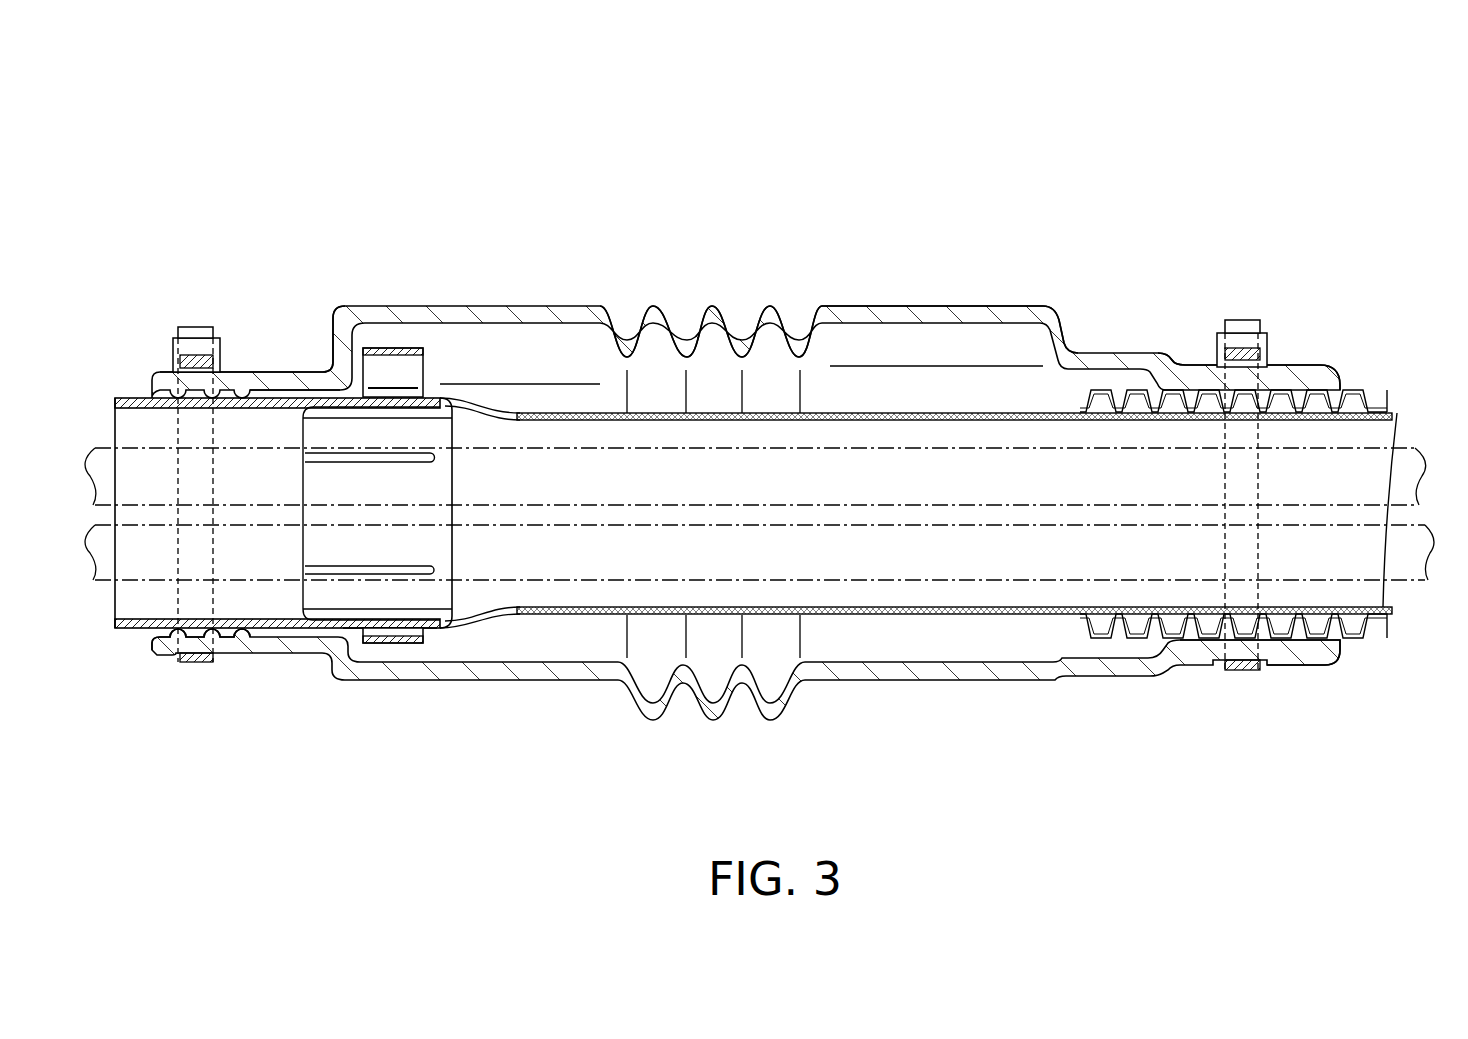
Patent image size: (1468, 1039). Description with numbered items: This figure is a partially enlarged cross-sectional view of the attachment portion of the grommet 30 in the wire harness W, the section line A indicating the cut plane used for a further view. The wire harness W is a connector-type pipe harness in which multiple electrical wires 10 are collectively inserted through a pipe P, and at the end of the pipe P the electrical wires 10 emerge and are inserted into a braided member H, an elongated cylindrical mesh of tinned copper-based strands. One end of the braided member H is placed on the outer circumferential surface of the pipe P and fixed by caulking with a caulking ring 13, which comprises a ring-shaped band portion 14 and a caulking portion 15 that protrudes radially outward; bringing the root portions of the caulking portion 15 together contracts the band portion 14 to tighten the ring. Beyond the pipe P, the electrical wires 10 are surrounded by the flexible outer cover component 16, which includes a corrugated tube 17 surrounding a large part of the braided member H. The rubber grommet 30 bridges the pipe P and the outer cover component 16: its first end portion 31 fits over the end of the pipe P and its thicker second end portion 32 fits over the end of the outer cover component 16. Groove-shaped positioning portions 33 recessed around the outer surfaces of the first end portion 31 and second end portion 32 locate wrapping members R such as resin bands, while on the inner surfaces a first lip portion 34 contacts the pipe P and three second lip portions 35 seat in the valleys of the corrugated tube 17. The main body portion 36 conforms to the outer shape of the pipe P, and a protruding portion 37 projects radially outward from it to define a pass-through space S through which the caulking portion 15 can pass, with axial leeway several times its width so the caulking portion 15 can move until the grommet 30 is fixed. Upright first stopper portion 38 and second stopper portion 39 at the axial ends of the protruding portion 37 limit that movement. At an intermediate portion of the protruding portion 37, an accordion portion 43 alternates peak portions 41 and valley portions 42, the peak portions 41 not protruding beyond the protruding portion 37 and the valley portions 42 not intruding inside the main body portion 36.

The electrical wires 10 is at (1398, 540).
The caulking ring 13 is at (393, 643).
The band portion 14 is at (412, 643).
The caulking portion 15 is at (393, 372).
The outer cover component 16 is at (944, 458).
The corrugated tube 17 is at (1352, 398).
The grommet 30 is at (902, 312).
The first end portion 31 is at (257, 378).
The second end portion 32 is at (1288, 375).
The positioning portions 33 is at (190, 662).
The first lip portion 34 is at (198, 630).
The second lip portion 35 is at (1265, 615).
The main body portion 36 is at (487, 676).
The protruding portion 37 is at (974, 312).
The first stopper portion 38 is at (330, 350).
The second stopper portion 39 is at (1057, 340).
The peak portions 41 is at (656, 310).
The valley portions 42 is at (742, 342).
The accordion portion 43 is at (712, 306).
The wrapping members R is at (199, 330).
The pass-through space S is at (521, 327).
The pipe P is at (265, 627).
The braided member H is at (913, 615).
The wire harness W is at (880, 124).
The section A- A is at (427, 163).